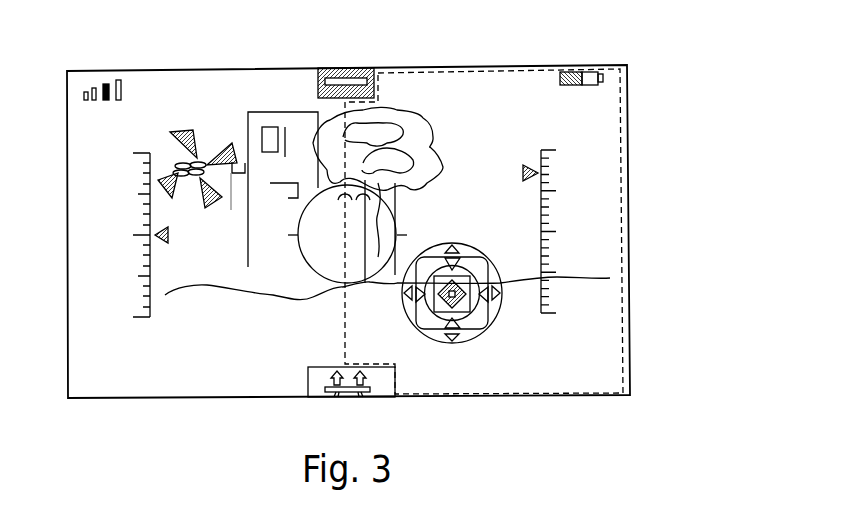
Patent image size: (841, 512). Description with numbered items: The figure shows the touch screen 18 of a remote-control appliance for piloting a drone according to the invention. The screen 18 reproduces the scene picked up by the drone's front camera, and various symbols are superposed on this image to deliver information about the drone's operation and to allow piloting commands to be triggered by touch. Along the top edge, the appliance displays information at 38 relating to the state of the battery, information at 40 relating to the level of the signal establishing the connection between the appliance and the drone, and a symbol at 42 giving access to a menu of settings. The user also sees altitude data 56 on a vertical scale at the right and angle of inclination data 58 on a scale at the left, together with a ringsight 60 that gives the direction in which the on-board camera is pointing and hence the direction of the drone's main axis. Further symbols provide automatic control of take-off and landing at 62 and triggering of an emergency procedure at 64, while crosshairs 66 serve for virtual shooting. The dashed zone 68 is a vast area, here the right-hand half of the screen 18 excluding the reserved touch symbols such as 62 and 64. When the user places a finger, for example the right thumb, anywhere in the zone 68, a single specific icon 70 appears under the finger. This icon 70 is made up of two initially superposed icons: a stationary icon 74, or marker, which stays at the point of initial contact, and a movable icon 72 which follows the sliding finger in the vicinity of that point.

The screen 18 is at (484, 86).
The battery state information 38 is at (589, 72).
The signal level information 40 is at (107, 82).
The settings menu access symbol 42 is at (112, 380).
The altitude data 56 is at (550, 200).
The angle of inclination data 58 is at (160, 277).
The ringsight 60 is at (308, 272).
The take-off and landing symbol 62 is at (322, 381).
The emergency procedure symbol 64 is at (320, 93).
The crosshairs 66 is at (227, 148).
The zone 68 is at (631, 122).
The specific icon 70 is at (463, 305).
The movable icon 72 is at (472, 320).
The stationary icon 74 is at (431, 340).